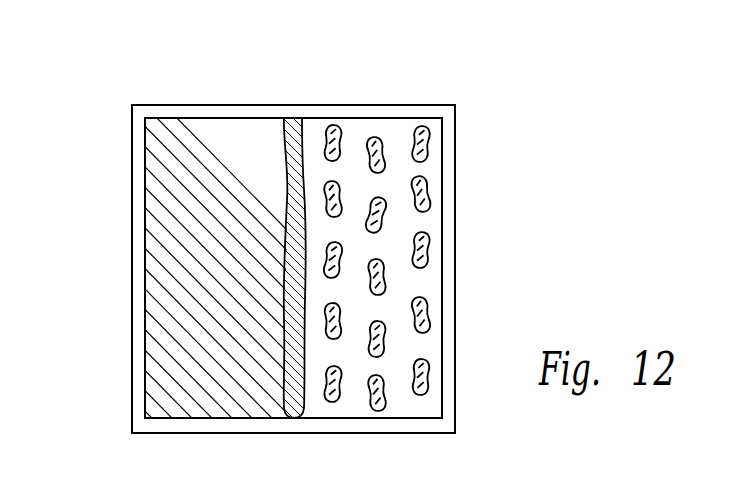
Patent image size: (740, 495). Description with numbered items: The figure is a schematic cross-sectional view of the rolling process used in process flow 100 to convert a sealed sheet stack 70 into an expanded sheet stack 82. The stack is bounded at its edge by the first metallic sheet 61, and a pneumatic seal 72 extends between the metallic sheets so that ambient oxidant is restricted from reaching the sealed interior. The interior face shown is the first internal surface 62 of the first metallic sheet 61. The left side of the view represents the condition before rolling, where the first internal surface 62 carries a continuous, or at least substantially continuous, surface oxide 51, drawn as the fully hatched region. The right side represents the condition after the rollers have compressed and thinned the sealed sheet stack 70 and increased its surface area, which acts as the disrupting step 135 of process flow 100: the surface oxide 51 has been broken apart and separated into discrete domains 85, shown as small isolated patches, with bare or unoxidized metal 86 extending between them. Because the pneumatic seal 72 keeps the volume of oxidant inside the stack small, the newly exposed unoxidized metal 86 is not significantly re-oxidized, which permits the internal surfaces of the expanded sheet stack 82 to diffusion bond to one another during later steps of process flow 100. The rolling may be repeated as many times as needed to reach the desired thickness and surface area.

The process flow 100 is at (538, 121).
The disrupting step 135 is at (529, 176).
The first metallic sheet 61 is at (129, 132).
The pneumatic seal 72 is at (143, 262).
The surface oxide 51 is at (208, 135).
The first internal surface 62 is at (160, 337).
The domains 85 is at (426, 252).
The bare and/or unoxidized metal 86 is at (428, 282).
The sealed sheet stack 70 is at (111, 389).
The expanded sheet stack 82 is at (484, 430).